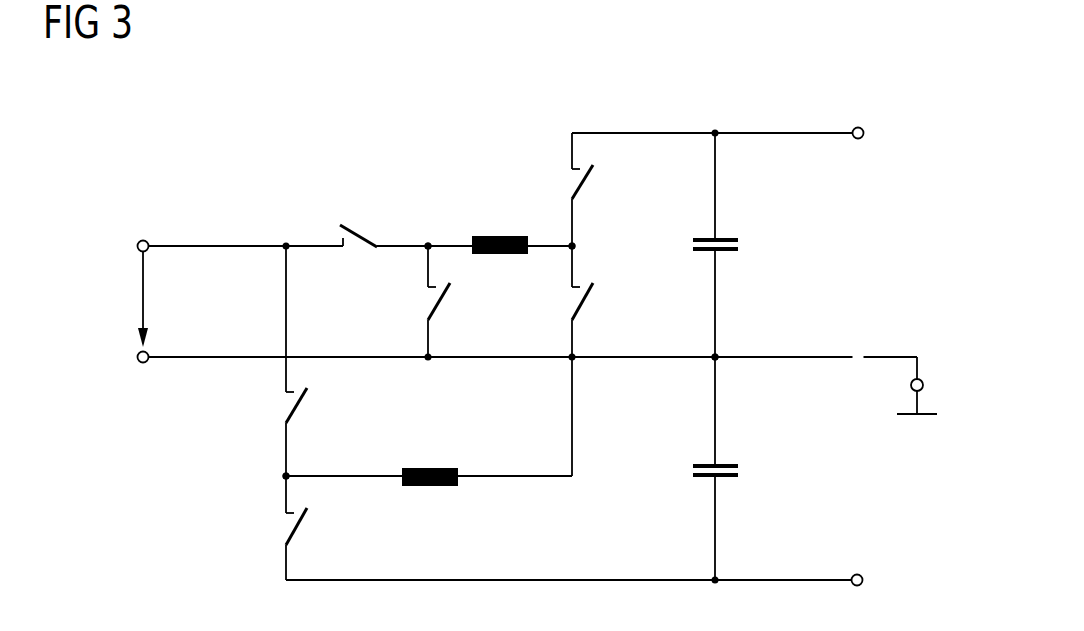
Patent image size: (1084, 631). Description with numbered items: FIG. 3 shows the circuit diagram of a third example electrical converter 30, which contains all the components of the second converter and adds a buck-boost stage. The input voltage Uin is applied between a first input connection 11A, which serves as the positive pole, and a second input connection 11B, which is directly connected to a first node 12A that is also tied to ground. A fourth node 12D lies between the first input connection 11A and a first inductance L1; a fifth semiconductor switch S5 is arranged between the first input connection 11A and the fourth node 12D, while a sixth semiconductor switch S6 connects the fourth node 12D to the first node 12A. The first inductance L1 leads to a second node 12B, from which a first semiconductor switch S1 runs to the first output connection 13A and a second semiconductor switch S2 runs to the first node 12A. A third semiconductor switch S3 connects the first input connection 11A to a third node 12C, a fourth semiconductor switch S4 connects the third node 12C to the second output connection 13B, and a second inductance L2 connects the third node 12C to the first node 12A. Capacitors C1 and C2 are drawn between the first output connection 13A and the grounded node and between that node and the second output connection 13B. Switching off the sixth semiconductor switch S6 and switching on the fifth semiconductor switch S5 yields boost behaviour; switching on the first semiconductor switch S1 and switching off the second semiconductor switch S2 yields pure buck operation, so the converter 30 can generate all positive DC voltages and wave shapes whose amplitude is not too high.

The converter 30 is at (300, 91).
The first input connection 11A is at (137, 246).
The second input connection 11B is at (137, 357).
The input voltage Uin is at (142, 294).
The first node 12A is at (713, 360).
The second node 12B is at (577, 246).
The third node 12C is at (282, 476).
The fourth node 12D is at (430, 240).
The first output connection 13A is at (864, 133).
The second output connection 13B is at (863, 580).
The first semiconductor switch S1 is at (587, 183).
The second semiconductor switch S2 is at (587, 303).
The third semiconductor switch S3 is at (302, 405).
The fourth semiconductor switch S4 is at (302, 527).
The fifth semiconductor switch S5 is at (362, 232).
The sixth semiconductor switch S6 is at (446, 303).
The first inductance L1 is at (506, 236).
The second inductance L2 is at (428, 488).
The first capacitor C1 is at (725, 253).
The second capacitor C2 is at (725, 479).